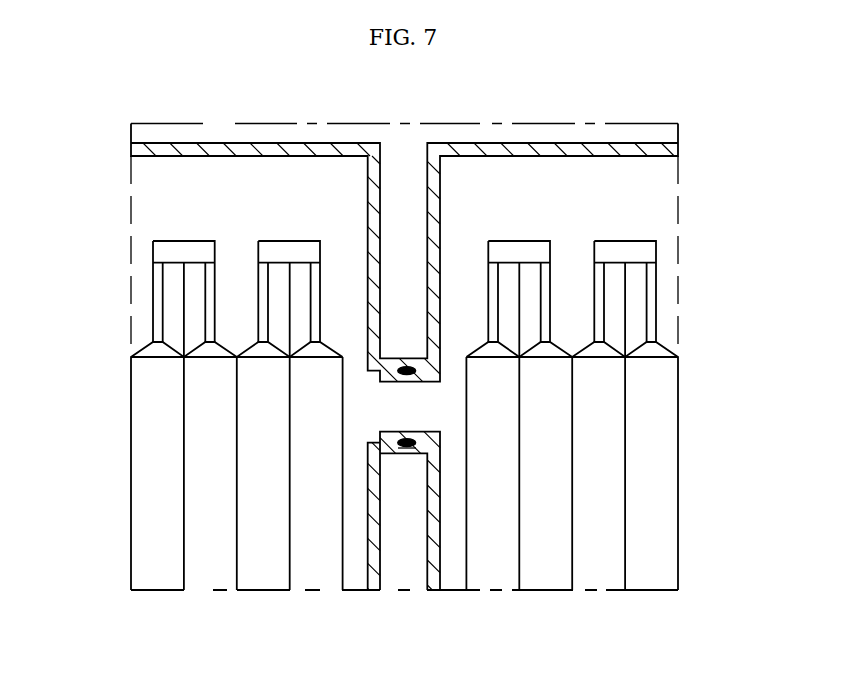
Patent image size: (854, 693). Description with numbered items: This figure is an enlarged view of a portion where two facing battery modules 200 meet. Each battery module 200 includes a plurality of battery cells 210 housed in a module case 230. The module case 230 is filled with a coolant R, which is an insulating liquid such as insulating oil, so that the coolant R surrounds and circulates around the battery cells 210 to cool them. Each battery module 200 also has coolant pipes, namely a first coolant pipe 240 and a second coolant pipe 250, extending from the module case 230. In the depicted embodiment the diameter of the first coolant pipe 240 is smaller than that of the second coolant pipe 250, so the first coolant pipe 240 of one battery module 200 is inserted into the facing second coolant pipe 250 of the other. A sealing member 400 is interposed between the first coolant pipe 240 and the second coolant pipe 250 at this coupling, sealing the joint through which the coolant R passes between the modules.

The battery module 200 is at (257, 610).
The battery cell 210 is at (147, 402).
The module case 230 is at (220, 150).
The coolant R is at (288, 168).
The first coolant pipe 240 is at (420, 437).
The second coolant pipe 250 is at (393, 450).
The sealing member 400 is at (403, 367).